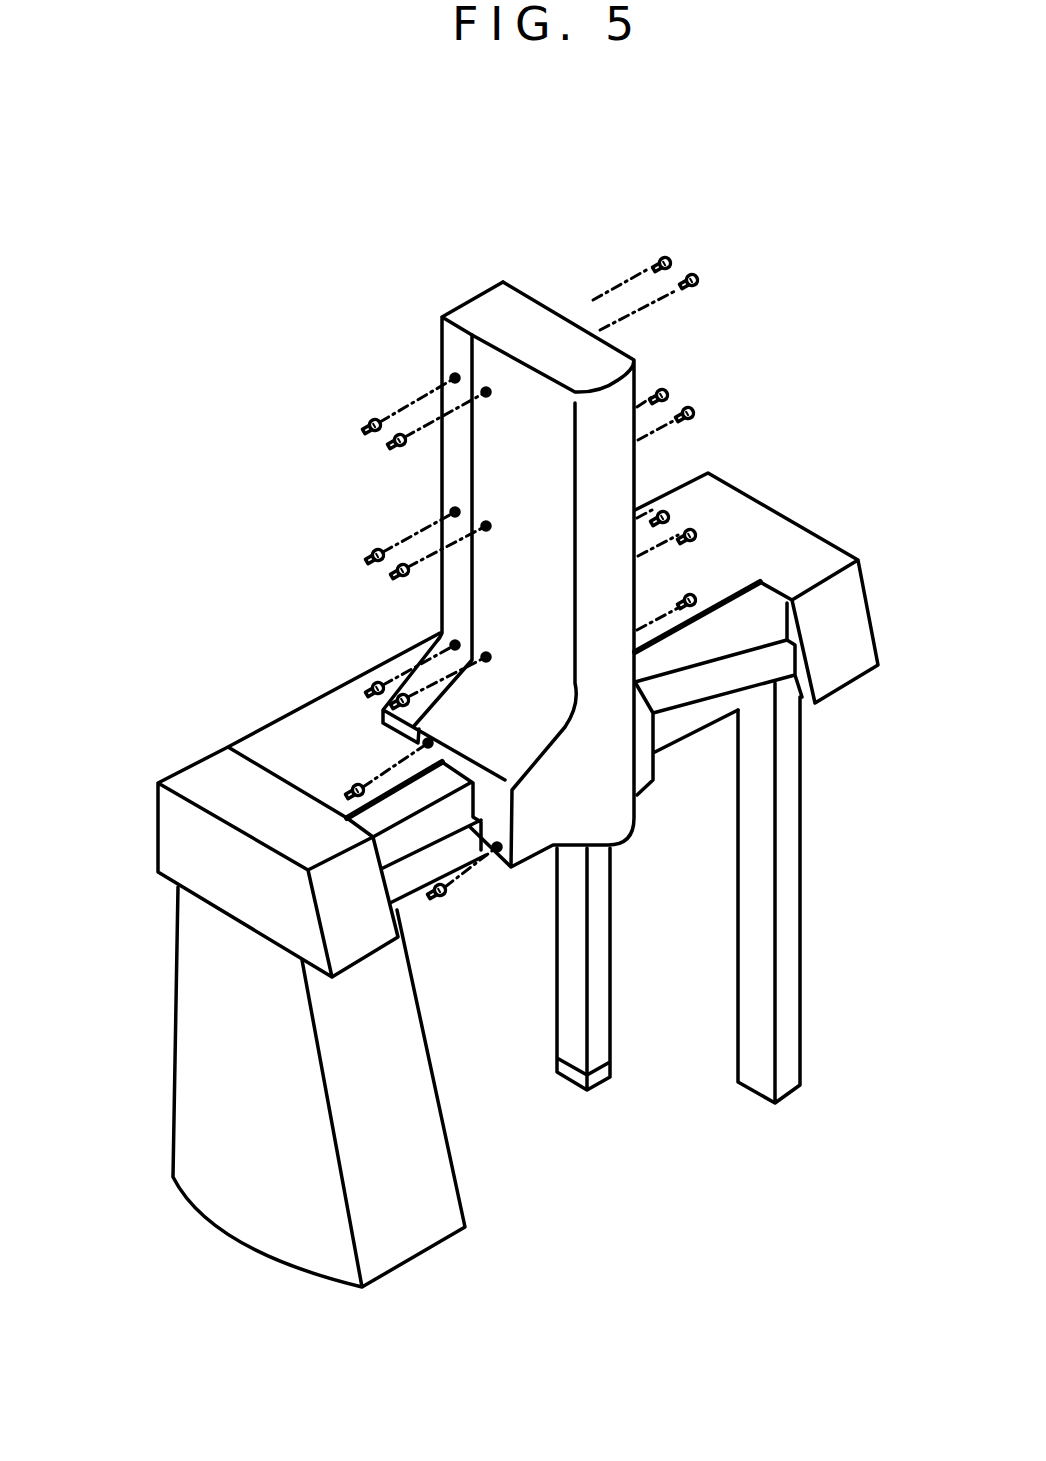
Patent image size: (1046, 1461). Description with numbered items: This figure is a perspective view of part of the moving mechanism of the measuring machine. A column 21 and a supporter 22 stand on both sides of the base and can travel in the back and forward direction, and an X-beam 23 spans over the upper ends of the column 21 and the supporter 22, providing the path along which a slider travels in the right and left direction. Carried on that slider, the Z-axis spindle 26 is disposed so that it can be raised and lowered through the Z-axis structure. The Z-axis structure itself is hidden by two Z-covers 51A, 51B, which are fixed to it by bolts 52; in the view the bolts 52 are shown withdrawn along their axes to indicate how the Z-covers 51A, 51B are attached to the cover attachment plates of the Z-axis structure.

The column 21 is at (180, 1097).
The supporter 22 is at (793, 968).
The X-beam 23 is at (262, 735).
The Z-axis spindle 26 is at (608, 1032).
The Z-cover 51A is at (637, 365).
The Z-cover 51B is at (467, 300).
The bolt 52 is at (700, 283).